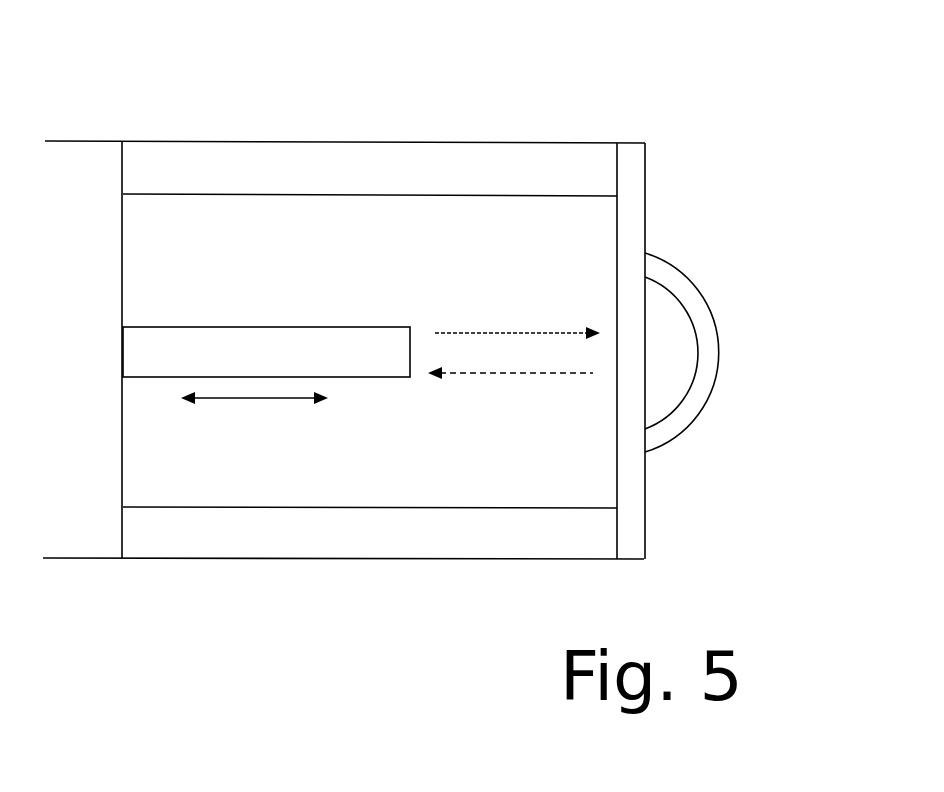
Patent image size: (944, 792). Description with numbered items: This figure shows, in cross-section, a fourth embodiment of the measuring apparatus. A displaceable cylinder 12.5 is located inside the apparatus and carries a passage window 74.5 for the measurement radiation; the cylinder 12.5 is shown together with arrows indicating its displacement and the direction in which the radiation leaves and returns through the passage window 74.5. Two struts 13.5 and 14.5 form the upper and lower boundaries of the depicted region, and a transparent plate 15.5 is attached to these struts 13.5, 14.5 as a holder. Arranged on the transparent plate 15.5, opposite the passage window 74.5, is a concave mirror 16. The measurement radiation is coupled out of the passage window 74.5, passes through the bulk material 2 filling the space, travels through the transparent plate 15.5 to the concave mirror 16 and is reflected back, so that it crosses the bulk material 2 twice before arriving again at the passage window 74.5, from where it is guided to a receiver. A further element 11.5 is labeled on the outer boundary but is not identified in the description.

The bulk material 2 is at (414, 466).
The top wall 11.5 is at (106, 141).
The displaceable cylinder 12.5 is at (253, 329).
The strut 13.5 is at (428, 130).
The strut 14.5 is at (294, 559).
The transparent plate 15.5 is at (642, 194).
The concave mirror 16 is at (715, 325).
The passage window 74.5 is at (411, 337).